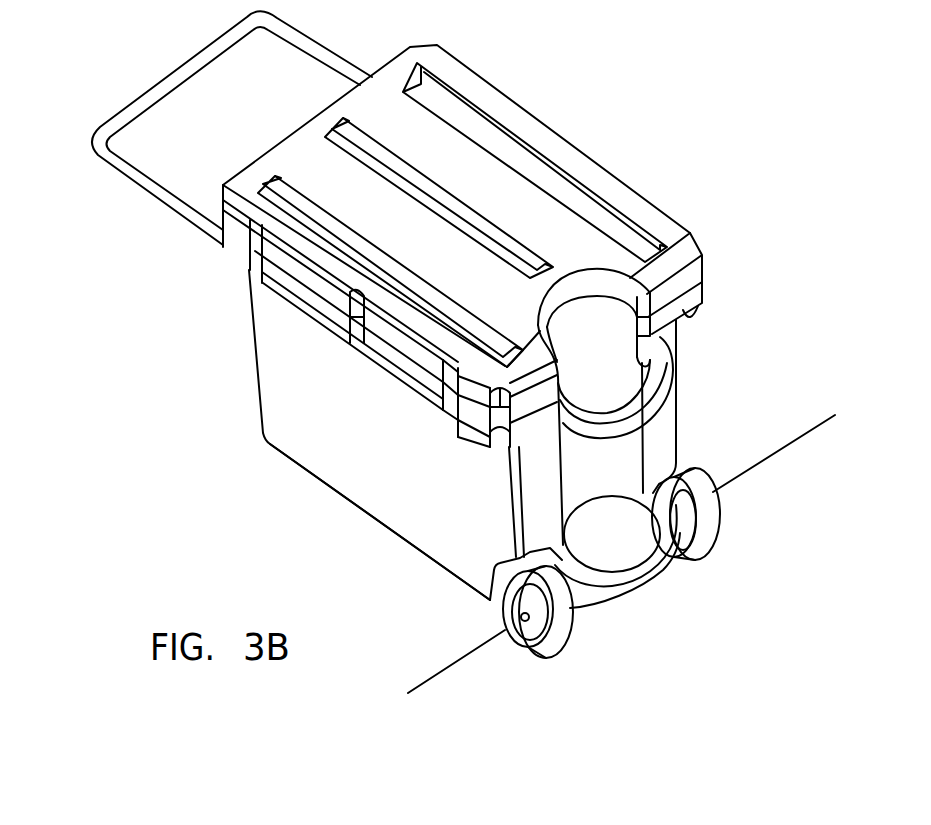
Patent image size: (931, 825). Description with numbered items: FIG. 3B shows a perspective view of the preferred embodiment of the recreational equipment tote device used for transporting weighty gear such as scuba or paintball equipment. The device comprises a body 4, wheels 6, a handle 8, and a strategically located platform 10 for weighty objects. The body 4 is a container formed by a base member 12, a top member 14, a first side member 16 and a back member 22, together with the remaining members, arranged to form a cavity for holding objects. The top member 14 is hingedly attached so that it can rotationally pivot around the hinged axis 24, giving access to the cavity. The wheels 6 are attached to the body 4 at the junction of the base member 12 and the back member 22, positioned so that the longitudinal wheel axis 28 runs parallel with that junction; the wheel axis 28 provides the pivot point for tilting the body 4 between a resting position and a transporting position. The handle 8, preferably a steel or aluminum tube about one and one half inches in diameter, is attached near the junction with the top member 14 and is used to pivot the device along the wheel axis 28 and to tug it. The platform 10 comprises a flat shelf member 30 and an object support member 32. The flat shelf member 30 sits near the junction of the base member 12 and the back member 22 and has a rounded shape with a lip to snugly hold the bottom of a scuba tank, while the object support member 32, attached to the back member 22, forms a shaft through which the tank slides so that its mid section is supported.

The body 4 is at (392, 463).
The wheels 6 is at (713, 522).
The handle 8 is at (148, 95).
The platform 10 is at (633, 587).
The base member 12 is at (342, 500).
The top member 14 is at (477, 170).
The first side member 16 is at (280, 388).
The back member 22 is at (667, 433).
The hinged axis 24 is at (703, 268).
The wheel axis 28 is at (765, 455).
The flat shelf member 30 is at (647, 563).
The object support member 32 is at (657, 412).